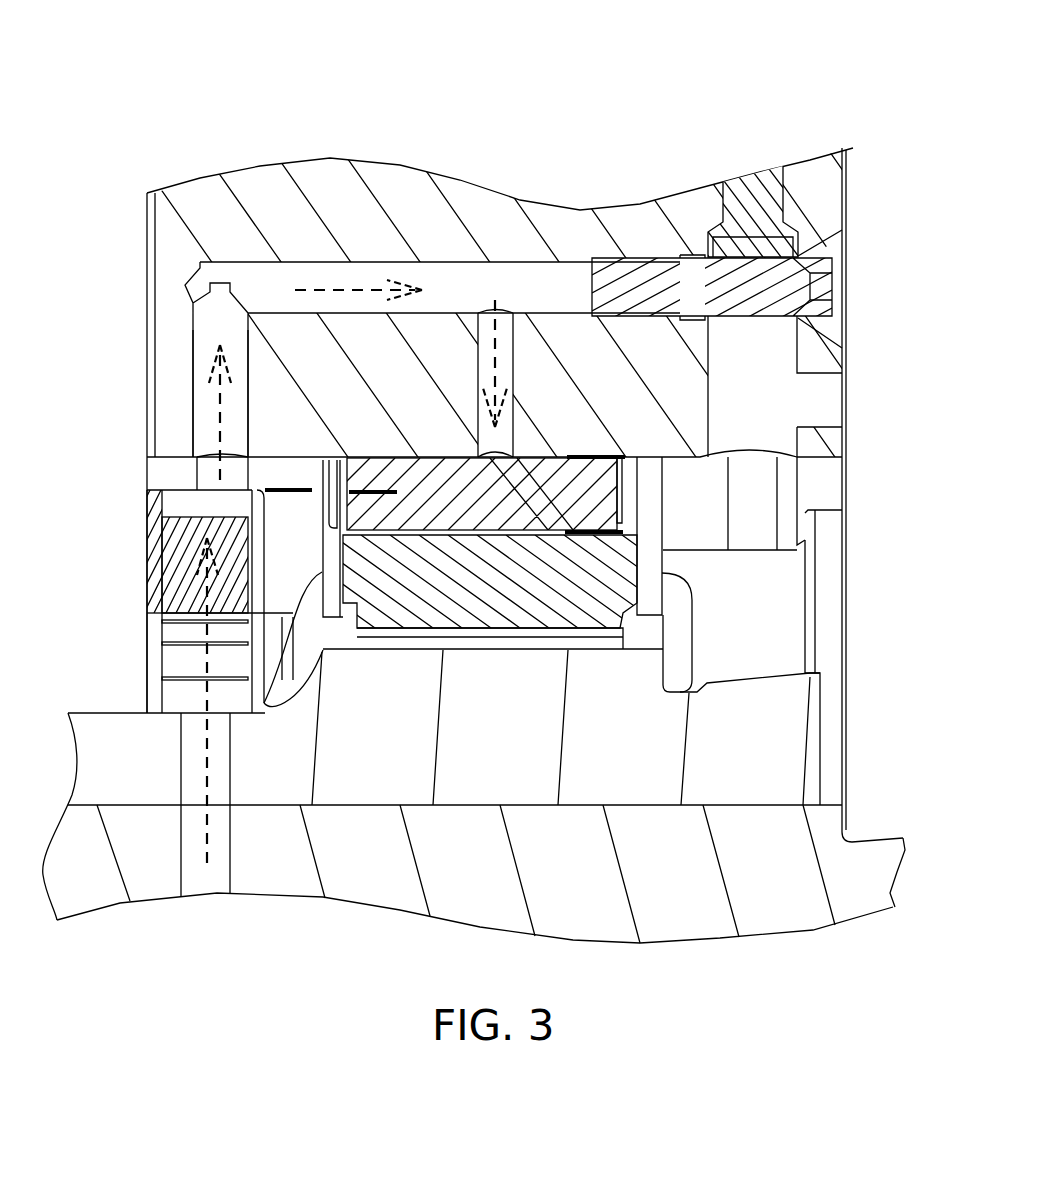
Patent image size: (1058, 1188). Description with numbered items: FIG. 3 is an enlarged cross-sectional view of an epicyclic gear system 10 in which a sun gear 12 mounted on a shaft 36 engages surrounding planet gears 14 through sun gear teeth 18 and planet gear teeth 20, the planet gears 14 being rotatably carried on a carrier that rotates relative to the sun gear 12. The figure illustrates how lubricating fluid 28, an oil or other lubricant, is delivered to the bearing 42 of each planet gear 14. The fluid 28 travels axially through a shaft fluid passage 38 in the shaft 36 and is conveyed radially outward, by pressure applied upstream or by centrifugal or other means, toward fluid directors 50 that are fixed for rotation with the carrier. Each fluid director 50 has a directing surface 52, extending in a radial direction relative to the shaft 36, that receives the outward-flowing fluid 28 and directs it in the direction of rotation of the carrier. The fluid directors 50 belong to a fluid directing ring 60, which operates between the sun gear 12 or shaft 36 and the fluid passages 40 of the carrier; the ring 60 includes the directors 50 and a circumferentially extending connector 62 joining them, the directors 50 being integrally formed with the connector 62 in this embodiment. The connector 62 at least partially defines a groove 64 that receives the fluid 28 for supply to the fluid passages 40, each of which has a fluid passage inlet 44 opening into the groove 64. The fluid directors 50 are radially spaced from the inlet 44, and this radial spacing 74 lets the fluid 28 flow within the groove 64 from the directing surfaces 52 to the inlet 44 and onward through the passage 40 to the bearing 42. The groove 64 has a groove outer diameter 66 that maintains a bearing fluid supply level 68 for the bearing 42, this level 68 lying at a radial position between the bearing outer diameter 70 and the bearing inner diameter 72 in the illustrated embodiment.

The epicyclic gear system 10 is at (725, 88).
The sun gear 12 is at (720, 740).
The planet gears 14 is at (537, 573).
The sun gear teeth 18 is at (543, 660).
The planet gear teeth 20 is at (527, 602).
The fluid 28 is at (340, 290).
The shaft 36 is at (787, 873).
The shaft fluid passage 38 is at (230, 835).
The fluid passage 40 is at (203, 333).
The bearing 42 is at (532, 492).
The fluid passage inlet 44 is at (165, 503).
The fluid directors 50 is at (195, 684).
The directing surface 52 is at (188, 538).
The fluid directing ring 60 is at (136, 527).
The circumferentially extending connector 62 is at (153, 702).
The groove 64 is at (252, 560).
The groove outer diameter 66 is at (293, 478).
The bearing fluid supply level 68 is at (377, 480).
The bearing outer diameter 70 is at (583, 457).
The bearing inner diameter 72 is at (583, 508).
The radial spacing 74 is at (172, 495).